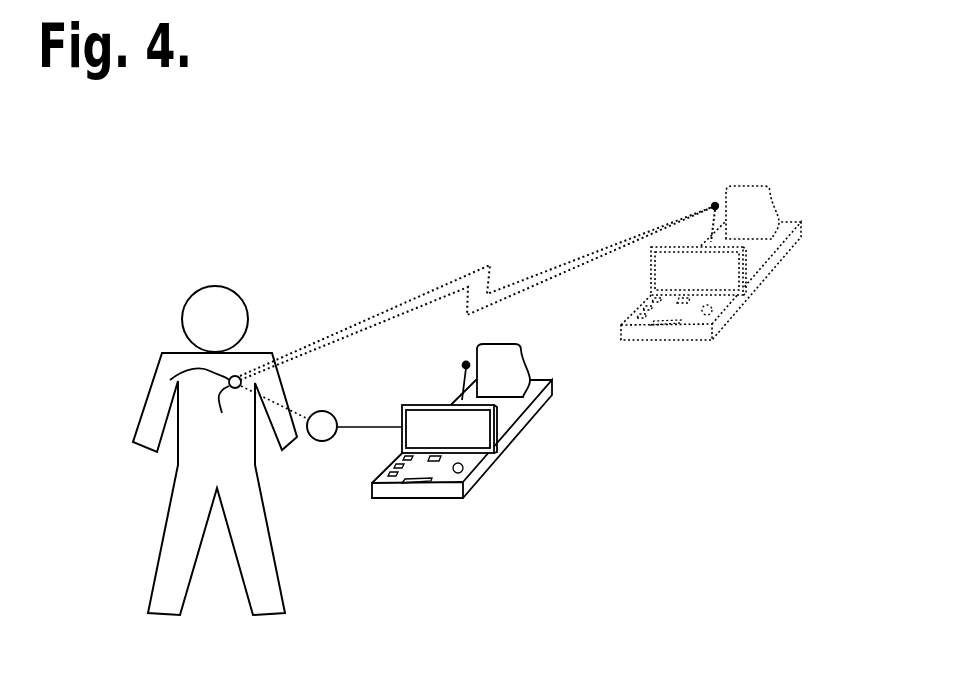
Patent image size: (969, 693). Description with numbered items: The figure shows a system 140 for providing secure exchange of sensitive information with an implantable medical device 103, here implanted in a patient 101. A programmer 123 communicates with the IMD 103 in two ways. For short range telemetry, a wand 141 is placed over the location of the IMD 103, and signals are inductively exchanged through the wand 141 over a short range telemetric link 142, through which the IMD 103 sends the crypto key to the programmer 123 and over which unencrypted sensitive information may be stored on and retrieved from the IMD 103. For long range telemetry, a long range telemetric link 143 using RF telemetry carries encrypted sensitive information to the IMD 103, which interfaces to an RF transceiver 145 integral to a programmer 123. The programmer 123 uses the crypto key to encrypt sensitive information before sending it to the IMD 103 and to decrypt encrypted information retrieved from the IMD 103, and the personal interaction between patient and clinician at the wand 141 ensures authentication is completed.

The system 140 is at (220, 107).
The patient 101 is at (215, 287).
The implantable medical device 103 is at (170, 380).
The wand 141 is at (316, 441).
The short range telemetric link 142 is at (300, 386).
The long range telemetric link 143 is at (483, 236).
The RF transceiver 145 is at (714, 200).
The programmer 123 is at (418, 498).